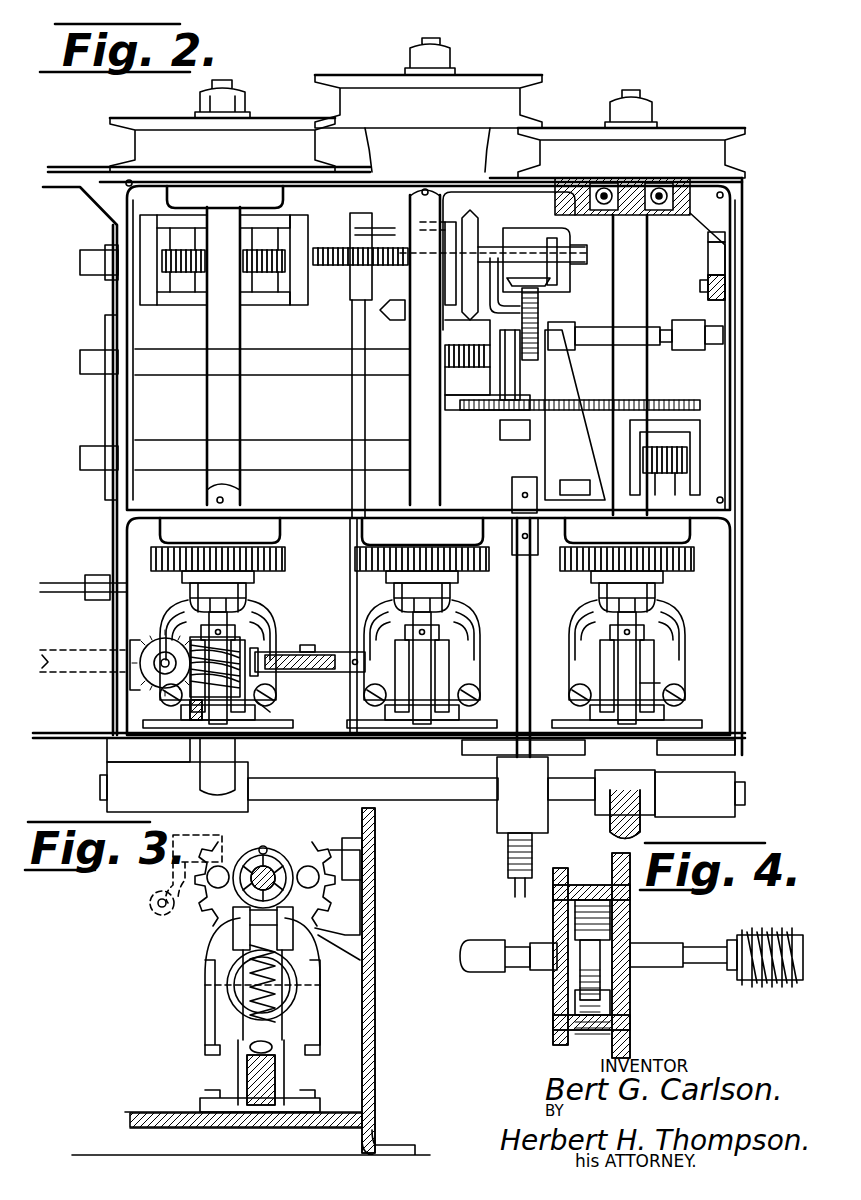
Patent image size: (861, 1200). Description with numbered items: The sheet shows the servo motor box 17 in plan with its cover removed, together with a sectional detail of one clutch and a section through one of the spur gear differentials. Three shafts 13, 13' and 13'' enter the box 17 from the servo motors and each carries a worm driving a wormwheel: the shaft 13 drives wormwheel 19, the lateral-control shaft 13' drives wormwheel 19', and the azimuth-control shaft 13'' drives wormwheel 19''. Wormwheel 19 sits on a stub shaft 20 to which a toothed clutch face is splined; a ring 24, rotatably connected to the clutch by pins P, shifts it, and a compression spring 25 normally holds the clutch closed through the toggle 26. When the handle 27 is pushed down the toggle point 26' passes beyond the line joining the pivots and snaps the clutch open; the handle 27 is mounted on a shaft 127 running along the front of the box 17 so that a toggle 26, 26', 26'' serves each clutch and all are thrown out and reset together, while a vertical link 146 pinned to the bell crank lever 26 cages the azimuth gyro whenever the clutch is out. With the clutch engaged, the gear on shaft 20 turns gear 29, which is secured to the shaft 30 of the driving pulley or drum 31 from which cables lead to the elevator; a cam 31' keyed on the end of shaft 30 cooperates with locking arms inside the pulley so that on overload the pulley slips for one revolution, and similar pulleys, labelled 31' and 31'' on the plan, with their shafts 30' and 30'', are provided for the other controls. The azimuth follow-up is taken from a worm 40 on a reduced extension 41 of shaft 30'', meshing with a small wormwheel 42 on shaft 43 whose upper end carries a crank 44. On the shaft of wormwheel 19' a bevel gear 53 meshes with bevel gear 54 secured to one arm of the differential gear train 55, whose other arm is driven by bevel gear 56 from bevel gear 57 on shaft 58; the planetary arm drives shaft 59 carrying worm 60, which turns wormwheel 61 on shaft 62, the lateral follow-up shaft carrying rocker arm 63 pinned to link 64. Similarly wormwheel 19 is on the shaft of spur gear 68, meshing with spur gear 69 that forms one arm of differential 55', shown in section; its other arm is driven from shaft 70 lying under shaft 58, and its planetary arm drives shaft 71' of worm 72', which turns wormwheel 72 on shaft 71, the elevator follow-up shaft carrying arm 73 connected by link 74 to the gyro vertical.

In FIG. 2, the shaft 13 is at (89, 277).
In FIG. 2, the shaft 13' is at (86, 407).
In FIG. 2, the shaft 13'' is at (88, 475).
In FIG. 2, the servo motor box 17 is at (740, 612).
In FIG. 3, the servo motor box 17 is at (375, 1015).
In FIG. 2, the wormwheel 19 is at (656, 457).
In FIG. 2, the wormwheel 19' is at (447, 357).
In FIG. 2, the wormwheel 19'' is at (224, 260).
In FIG. 3, the stub shaft 20 is at (245, 975).
In FIG. 2, the ring 24 is at (665, 607).
In FIG. 3, the ring 24 is at (312, 958).
In FIG. 3, the compression spring 25 is at (280, 990).
In FIG. 2, the toggle 26 is at (679, 683).
In FIG. 3, the toggle 26 is at (245, 1076).
In FIG. 2, the toggle point 26' is at (495, 826).
In FIG. 2, the toggle 26'' is at (243, 766).
In FIG. 2, the handle 27 is at (612, 835).
In FIG. 2, the shaft 127 is at (745, 792).
In FIG. 3, the gear 29 is at (308, 838).
In FIG. 2, the shaft 30 is at (646, 365).
In FIG. 2, the shaft 30' is at (444, 347).
In FIG. 2, the shaft 30'' is at (250, 356).
In FIG. 2, the driving pulley 31 is at (631, 134).
In FIG. 2, the cam 31' is at (428, 105).
In FIG. 2, the pulley 31'' is at (222, 126).
In FIG. 2, the worm 40 is at (274, 714).
In FIG. 2, the reduced extension 41 is at (224, 620).
In FIG. 2, the small wormwheel 42 is at (165, 640).
In FIG. 2, the shaft 43 is at (160, 665).
In FIG. 2, the crank 44 is at (68, 652).
In FIG. 2, the bevel gear 53 is at (396, 306).
In FIG. 2, the bevel gear 54 is at (478, 220).
In FIG. 2, the differential gear train 55 is at (458, 248).
In FIG. 2, the differential gear train 55' is at (515, 436).
In FIG. 4, the differential gear train 55' is at (572, 958).
In FIG. 2, the bevel gear 56 is at (550, 238).
In FIG. 2, the bevel gear 57 is at (545, 283).
In FIG. 2, the shaft 58 is at (530, 385).
In FIG. 2, the shaft 59 is at (429, 236).
In FIG. 2, the worm 60 is at (345, 250).
In FIG. 2, the wormwheel 61 is at (336, 268).
In FIG. 2, the shaft 62 is at (355, 428).
In FIG. 2, the rocker arm 63 is at (326, 672).
In FIG. 2, the link 64 is at (318, 653).
In FIG. 2, the spur gear 68 is at (693, 406).
In FIG. 2, the spur gear 69 is at (542, 422).
In FIG. 4, the spur gear 69 is at (630, 1036).
In FIG. 2, the shaft 70 is at (531, 600).
In FIG. 4, the shaft 70 is at (491, 970).
In FIG. 2, the shaft 71 is at (618, 353).
In FIG. 4, the shaft 71' is at (683, 974).
In FIG. 2, the wormwheel 72 is at (543, 324).
In FIG. 4, the worm 72' is at (770, 978).
In FIG. 2, the arm 73 is at (722, 258).
In FIG. 2, the link 74 is at (726, 295).
In FIG. 2, the vertical link 146 is at (189, 713).
In FIG. 3, the pins P is at (212, 985).